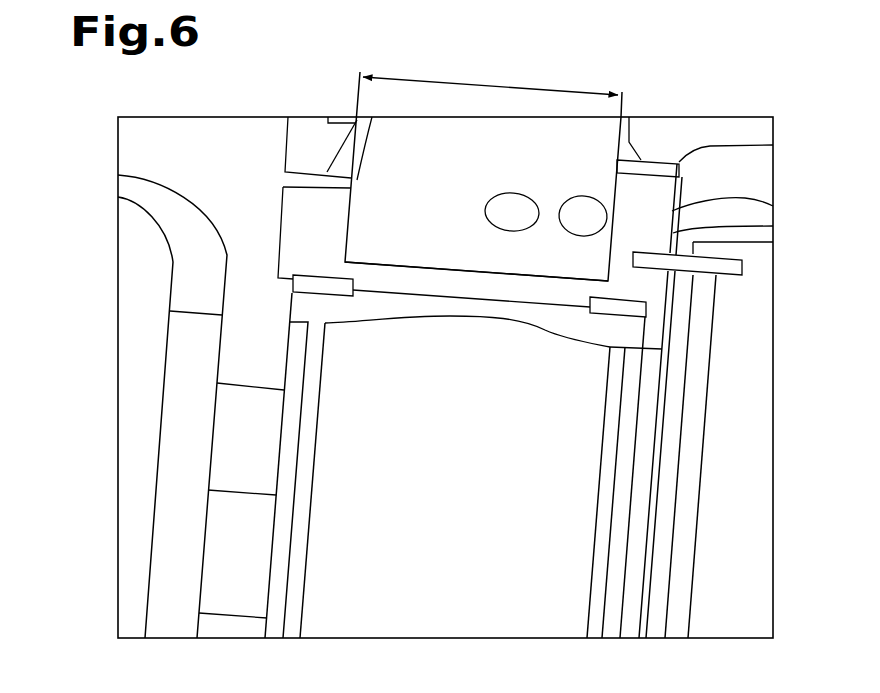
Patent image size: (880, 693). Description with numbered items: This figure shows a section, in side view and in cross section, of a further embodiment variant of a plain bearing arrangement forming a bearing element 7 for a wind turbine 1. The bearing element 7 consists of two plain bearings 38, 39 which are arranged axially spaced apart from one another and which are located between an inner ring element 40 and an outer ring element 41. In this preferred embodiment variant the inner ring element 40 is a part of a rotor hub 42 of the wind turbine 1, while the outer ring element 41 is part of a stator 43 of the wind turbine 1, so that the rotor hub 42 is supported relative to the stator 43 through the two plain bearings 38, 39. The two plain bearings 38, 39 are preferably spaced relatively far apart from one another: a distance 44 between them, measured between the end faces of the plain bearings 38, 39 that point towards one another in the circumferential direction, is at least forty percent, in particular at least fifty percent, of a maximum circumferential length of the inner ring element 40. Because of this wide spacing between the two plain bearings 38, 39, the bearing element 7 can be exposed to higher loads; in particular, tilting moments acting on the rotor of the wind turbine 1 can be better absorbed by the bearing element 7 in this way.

The wind turbine 1 is at (120, 415).
The bearing element 7 is at (698, 170).
The plain bearing 38 is at (324, 268).
The plain bearing 39 is at (615, 293).
The inner ring element 40 is at (291, 311).
The outer ring element 41 is at (431, 260).
The rotor hub 42 is at (203, 556).
The stator 43 is at (386, 266).
The distance 44 is at (557, 85).